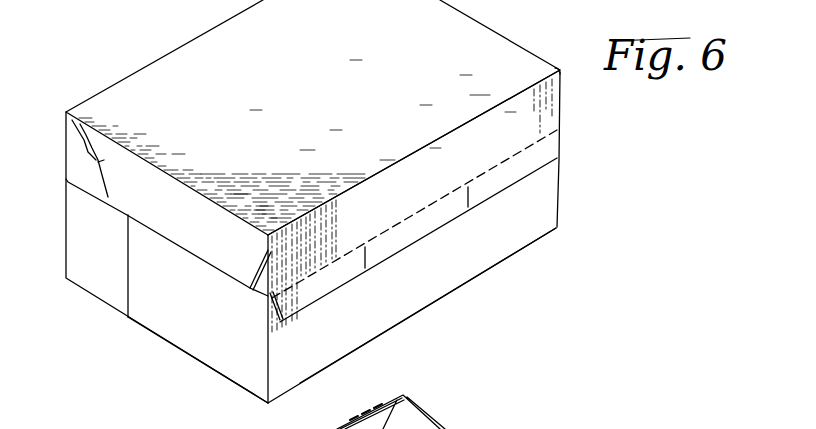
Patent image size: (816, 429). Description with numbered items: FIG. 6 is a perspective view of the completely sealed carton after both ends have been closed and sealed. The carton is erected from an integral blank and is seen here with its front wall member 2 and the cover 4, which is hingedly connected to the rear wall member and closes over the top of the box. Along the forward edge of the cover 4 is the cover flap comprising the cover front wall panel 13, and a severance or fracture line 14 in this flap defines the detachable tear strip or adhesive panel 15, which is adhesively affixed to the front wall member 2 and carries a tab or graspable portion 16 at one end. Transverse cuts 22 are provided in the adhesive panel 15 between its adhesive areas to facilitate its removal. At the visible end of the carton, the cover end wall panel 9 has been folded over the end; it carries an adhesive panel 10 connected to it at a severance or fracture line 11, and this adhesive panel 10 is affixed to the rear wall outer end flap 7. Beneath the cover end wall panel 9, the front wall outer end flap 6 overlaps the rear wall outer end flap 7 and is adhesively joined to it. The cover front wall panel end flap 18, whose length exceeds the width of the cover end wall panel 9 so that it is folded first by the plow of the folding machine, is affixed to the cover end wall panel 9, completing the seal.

The front wall member 2 is at (374, 324).
The cover 4 is at (296, 96).
The front wall outer end flap 6 is at (190, 303).
The rear wall outer end flap 7 is at (102, 256).
The cover end wall panel 9 is at (183, 217).
The adhesive panel 10 is at (77, 160).
The severance or fracture line 11 is at (100, 161).
The cover front wall panel 13 is at (405, 201).
The severance or fracture line 14 is at (507, 159).
The detachable tear strip or adhesive panel 15 is at (410, 243).
The tab or graspable portion 16 is at (268, 323).
The cover front wall panel end flap 18 is at (457, 428).
The transverse cuts 22 is at (468, 207).